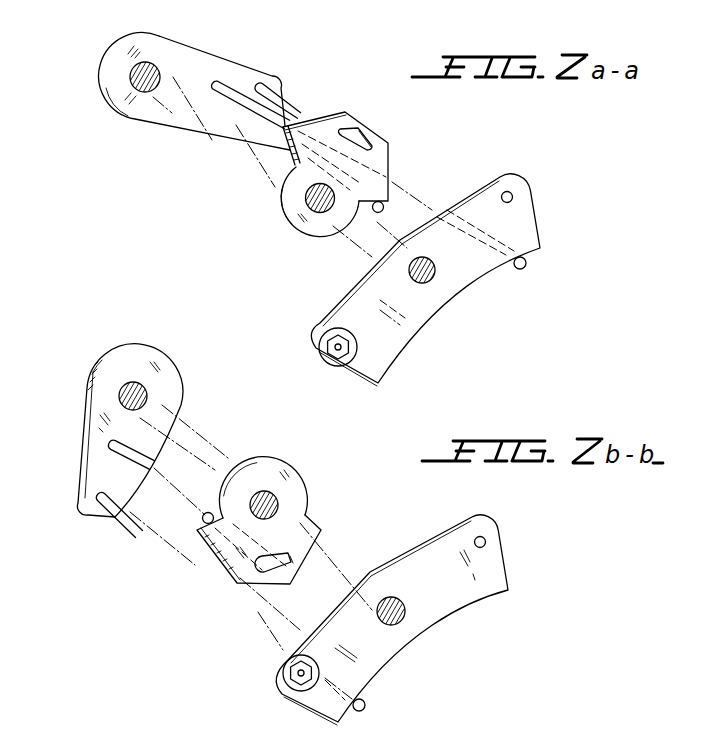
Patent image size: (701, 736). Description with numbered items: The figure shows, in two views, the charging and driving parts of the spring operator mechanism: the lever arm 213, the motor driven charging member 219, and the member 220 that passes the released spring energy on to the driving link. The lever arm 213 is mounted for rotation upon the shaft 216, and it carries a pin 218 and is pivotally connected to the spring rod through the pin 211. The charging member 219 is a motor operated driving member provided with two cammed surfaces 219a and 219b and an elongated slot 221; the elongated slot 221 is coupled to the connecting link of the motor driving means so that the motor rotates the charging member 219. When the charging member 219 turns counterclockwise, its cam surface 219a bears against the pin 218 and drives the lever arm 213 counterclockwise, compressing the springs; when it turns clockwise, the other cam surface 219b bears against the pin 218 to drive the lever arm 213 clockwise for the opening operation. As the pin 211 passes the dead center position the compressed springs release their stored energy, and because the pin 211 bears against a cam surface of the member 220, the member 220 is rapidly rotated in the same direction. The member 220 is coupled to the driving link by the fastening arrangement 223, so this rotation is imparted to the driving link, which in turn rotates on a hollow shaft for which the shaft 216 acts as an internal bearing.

In FIG. 2a-a, the pin 211 is at (293, 103).
In FIG. 2a-a, the lever arm 213 is at (135, 123).
In FIG. 2b-b, the lever arm 213 is at (87, 415).
In FIG. 2a-a, the shaft 216 is at (250, 167).
In FIG. 2b-b, the shaft 216 is at (212, 446).
In FIG. 2a-a, the pin 218 is at (233, 86).
In FIG. 2b-b, the pin 218 is at (150, 461).
In FIG. 2a-a, the charging member 219 is at (335, 177).
In FIG. 2b-b, the charging member 219 is at (261, 536).
In FIG. 2a-a, the cam surface 219a is at (288, 149).
In FIG. 2b-b, the cam surface 219a is at (313, 523).
In FIG. 2b-b, the cam surface 219b is at (203, 520).
In FIG. 2a-a, the member 220 is at (540, 230).
In FIG. 2b-b, the member 220 is at (448, 613).
In FIG. 2a-a, the elongated slot 221 is at (368, 129).
In FIG. 2b-b, the elongated slot 221 is at (268, 573).
In FIG. 2a-a, the fastening arrangement 223 is at (325, 327).